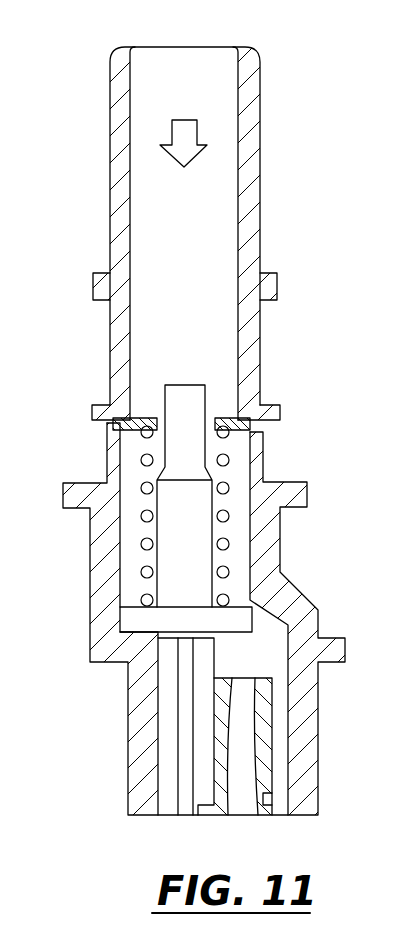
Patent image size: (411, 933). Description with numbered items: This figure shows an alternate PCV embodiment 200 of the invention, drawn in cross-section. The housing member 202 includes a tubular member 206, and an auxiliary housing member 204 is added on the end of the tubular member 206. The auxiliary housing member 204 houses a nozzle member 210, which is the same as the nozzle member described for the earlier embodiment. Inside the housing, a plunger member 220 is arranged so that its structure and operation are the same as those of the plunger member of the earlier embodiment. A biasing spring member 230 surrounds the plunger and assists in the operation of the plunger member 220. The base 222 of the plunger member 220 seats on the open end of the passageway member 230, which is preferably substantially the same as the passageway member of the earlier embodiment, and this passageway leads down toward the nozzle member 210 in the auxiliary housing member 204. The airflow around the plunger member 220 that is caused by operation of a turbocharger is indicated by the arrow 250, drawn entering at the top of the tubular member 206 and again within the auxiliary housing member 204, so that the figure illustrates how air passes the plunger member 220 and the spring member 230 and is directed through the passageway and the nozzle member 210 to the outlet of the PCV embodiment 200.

The PCV embodiment 200 is at (330, 97).
The housing member 202 is at (177, 233).
The auxiliary housing member 204 is at (140, 773).
The tubular member 206 is at (110, 363).
The nozzle member 210 is at (263, 793).
The plunger member 220 is at (173, 538).
The base 222 is at (138, 623).
The biasing spring member 230 is at (150, 598).
The arrow 250 is at (171, 152).